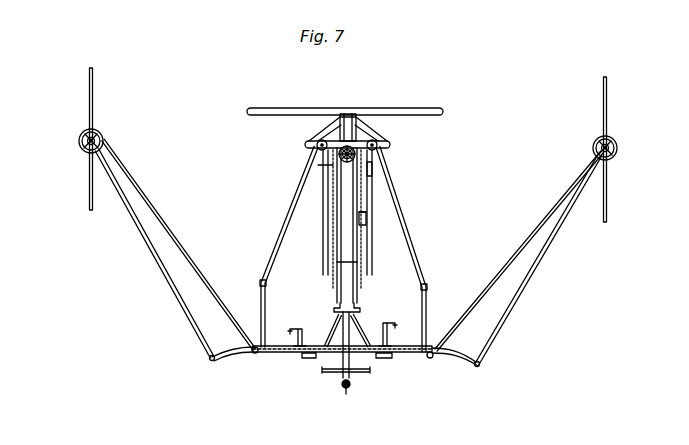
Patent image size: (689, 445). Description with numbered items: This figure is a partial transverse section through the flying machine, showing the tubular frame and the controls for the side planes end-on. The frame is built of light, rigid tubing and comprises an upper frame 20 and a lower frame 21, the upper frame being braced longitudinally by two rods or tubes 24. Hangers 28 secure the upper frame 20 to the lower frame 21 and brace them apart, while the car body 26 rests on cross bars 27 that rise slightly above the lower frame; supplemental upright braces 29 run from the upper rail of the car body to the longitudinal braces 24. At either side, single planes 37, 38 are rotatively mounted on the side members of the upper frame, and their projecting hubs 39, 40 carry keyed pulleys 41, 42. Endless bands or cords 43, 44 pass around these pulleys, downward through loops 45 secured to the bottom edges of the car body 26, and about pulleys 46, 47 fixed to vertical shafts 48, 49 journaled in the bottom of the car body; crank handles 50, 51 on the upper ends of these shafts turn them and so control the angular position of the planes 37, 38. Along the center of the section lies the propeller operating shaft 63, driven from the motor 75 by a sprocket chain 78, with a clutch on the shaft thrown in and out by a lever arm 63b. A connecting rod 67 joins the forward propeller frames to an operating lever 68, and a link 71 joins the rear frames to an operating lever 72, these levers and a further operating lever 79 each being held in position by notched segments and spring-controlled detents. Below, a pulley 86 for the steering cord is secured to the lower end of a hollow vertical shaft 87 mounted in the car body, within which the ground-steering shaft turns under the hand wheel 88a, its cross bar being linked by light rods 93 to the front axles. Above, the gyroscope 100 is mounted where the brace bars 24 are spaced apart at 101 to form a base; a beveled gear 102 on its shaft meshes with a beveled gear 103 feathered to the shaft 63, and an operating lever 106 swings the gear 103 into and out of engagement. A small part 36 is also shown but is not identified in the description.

The upper frame 20 is at (85, 149).
The lower frame 21 is at (205, 362).
The longitudinal rods or tubes 24 is at (310, 149).
The car body 26 is at (434, 317).
The cross bars 27 is at (452, 358).
The hangers 28 is at (157, 264).
The supplemental supporting hangers 29 is at (268, 273).
The clip 36 is at (320, 166).
The single plane 37 is at (88, 90).
The single plane 38 is at (607, 103).
The projecting hub 39 is at (87, 141).
The projecting hub 40 is at (612, 153).
The pulley 41 is at (79, 133).
The pulley 42 is at (616, 143).
The endless band or cord 43 is at (192, 277).
The endless band or cord 44 is at (522, 256).
The loops 45 is at (257, 356).
The pulley 46 is at (308, 360).
The pulley 47 is at (383, 360).
The vertical shaft 48 is at (297, 332).
The vertical shaft 49 is at (388, 334).
The crank handle 50 is at (297, 312).
The crank handle 51 is at (396, 322).
The propeller operating shaft 63 is at (357, 160).
The lever arm 63b is at (338, 263).
The connecting rod 67 is at (332, 190).
The operating lever 68 is at (338, 227).
The link 71 is at (366, 216).
The operating lever 72 is at (371, 245).
The motor 75 is at (333, 328).
The sprocket chain 78 is at (352, 262).
The operating lever 79 is at (323, 237).
The pulley 86 is at (341, 384).
The vertical shaft 87 is at (352, 323).
The hand wheel 88a is at (352, 301).
The light rods 93 is at (332, 374).
The gyroscope 100 is at (391, 109).
The spaced-apart portion of brace bars 101 is at (391, 146).
The beveled gear 102 is at (357, 133).
The beveled gear 103 is at (372, 175).
The operating lever 106 is at (367, 222).